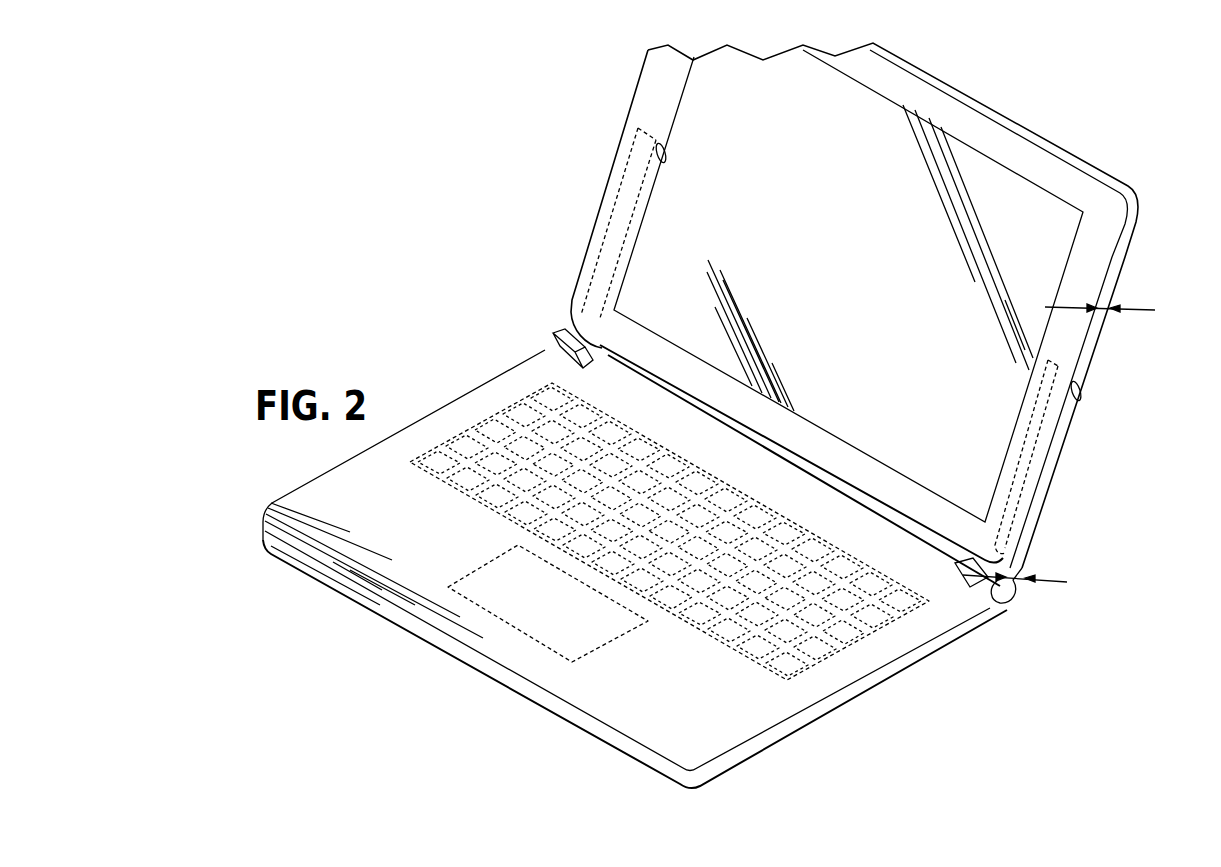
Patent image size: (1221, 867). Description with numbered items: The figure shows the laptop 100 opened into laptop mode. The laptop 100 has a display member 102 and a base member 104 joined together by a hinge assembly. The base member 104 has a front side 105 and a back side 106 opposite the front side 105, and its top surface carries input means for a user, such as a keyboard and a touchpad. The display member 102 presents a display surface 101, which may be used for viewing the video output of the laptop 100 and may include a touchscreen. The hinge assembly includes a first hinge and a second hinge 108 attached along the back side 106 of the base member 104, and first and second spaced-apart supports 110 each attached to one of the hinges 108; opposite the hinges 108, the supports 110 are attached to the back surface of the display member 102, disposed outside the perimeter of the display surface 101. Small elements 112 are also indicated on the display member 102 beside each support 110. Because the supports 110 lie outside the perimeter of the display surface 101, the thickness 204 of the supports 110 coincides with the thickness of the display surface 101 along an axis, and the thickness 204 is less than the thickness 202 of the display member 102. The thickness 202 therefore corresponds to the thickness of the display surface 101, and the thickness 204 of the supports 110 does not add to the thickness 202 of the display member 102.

The laptop 100 is at (487, 195).
The display surface 101 is at (854, 273).
The display member 102 is at (1127, 259).
The base member 104 is at (800, 732).
The front side 105 is at (425, 655).
The back side 106 is at (1018, 600).
The hinge 108 is at (968, 556).
The support 110 is at (636, 242).
The indicator 112 is at (668, 153).
The thickness of the display member 202 is at (1133, 308).
The thickness of the supports 204 is at (1047, 578).